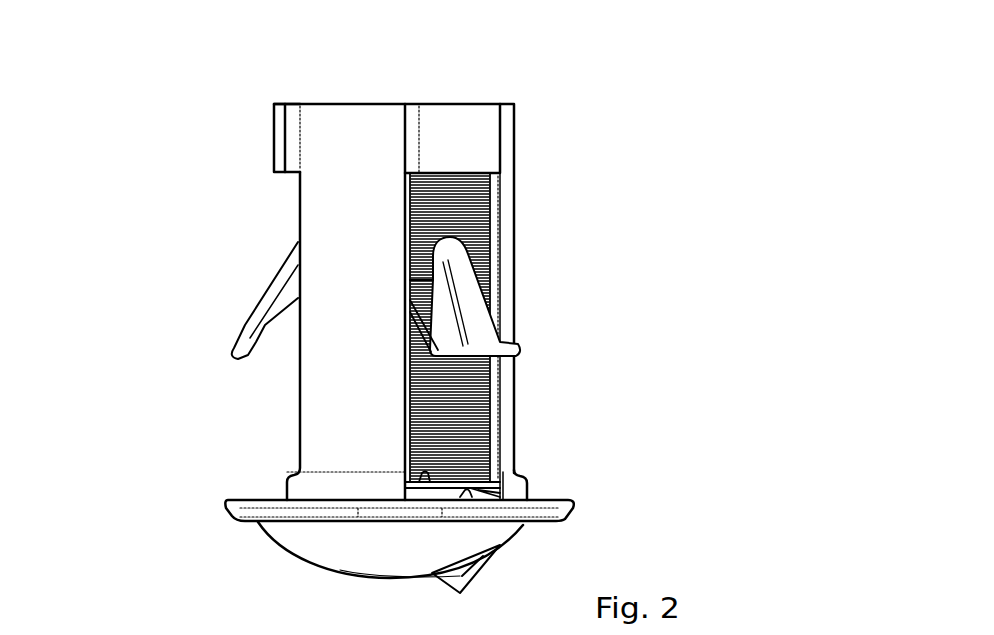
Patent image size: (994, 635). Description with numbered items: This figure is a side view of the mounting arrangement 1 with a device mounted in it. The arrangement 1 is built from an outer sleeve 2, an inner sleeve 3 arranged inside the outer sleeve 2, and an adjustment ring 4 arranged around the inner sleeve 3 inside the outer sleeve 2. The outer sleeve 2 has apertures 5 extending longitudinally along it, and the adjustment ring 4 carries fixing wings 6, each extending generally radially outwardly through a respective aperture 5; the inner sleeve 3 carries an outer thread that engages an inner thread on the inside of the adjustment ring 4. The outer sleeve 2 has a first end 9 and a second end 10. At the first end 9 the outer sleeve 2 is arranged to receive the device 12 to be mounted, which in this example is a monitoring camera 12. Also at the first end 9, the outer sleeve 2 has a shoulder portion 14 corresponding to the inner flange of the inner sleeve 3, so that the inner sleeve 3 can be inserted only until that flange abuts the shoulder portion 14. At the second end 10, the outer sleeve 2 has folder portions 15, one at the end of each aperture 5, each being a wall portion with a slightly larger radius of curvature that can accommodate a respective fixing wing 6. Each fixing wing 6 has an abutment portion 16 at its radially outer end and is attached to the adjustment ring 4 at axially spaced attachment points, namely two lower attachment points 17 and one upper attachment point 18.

The mounting arrangement 1 is at (688, 148).
The outer sleeve 2 is at (510, 152).
The inner sleeve 3 is at (500, 442).
The adjustment ring 4 is at (515, 320).
The aperture 5 is at (498, 240).
The fixing wing 6 is at (240, 323).
The first end 9 is at (166, 504).
The second end 10 is at (217, 120).
The monitoring camera 12 is at (500, 565).
The shoulder portion 14 is at (517, 478).
The folder portion 15 is at (462, 118).
The abutment portion 16 is at (240, 355).
The lower attachment point 17 is at (405, 300).
The upper attachment point 18 is at (496, 262).